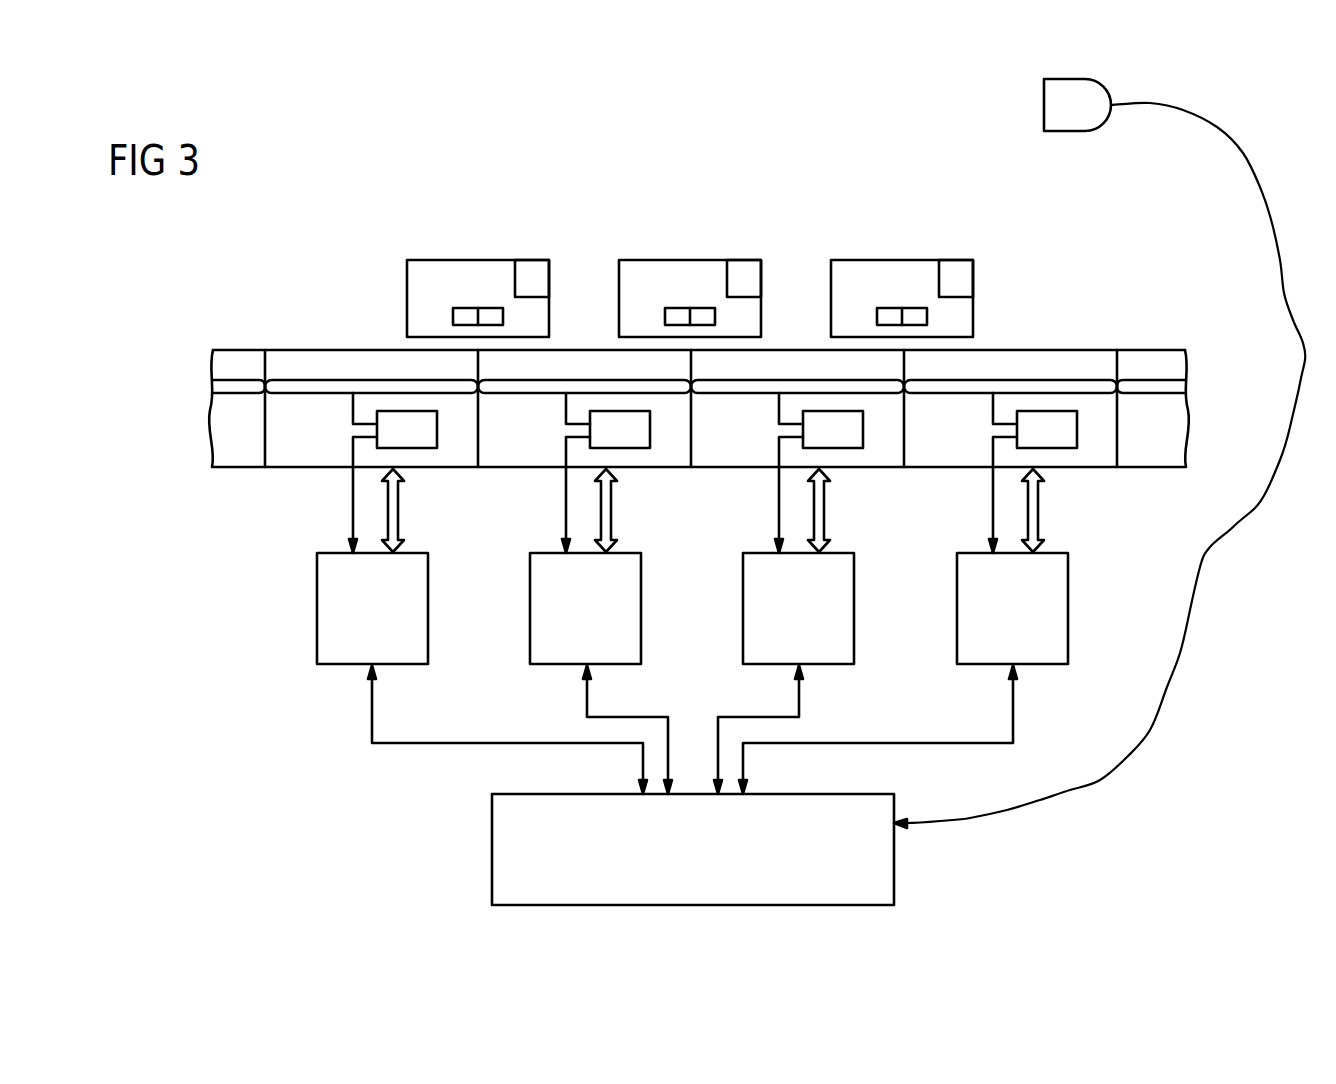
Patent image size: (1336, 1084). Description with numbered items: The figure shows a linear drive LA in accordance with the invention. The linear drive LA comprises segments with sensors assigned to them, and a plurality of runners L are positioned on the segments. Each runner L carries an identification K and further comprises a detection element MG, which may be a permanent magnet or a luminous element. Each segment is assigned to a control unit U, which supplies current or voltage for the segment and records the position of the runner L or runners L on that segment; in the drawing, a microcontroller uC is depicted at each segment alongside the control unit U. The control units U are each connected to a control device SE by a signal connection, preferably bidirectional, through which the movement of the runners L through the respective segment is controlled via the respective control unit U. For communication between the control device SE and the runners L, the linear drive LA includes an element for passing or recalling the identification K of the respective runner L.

The linear drive LA is at (240, 266).
The runner L is at (478, 247).
The identification K is at (534, 278).
The detection element MG is at (440, 302).
The microcontroller uC is at (418, 437).
The control unit U is at (407, 609).
The control device SE is at (510, 852).